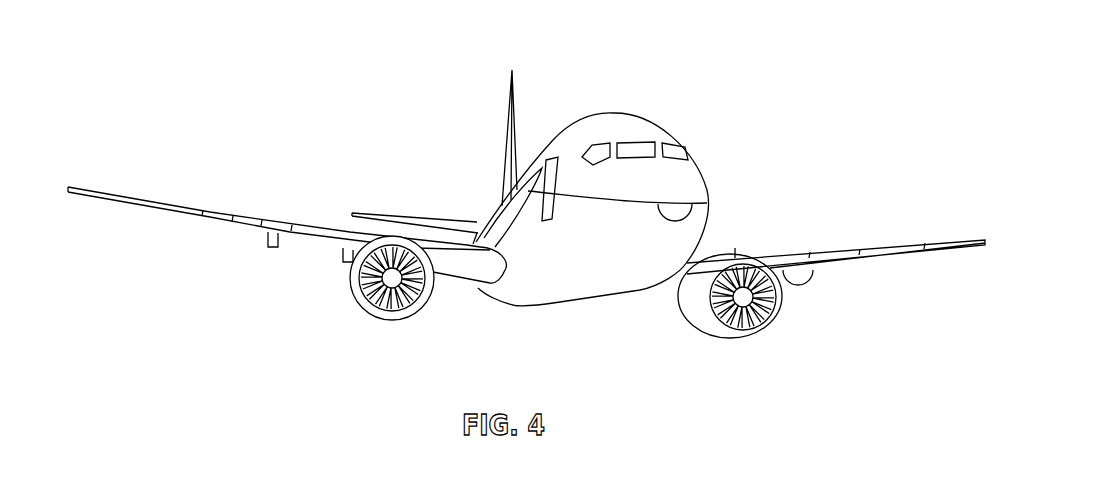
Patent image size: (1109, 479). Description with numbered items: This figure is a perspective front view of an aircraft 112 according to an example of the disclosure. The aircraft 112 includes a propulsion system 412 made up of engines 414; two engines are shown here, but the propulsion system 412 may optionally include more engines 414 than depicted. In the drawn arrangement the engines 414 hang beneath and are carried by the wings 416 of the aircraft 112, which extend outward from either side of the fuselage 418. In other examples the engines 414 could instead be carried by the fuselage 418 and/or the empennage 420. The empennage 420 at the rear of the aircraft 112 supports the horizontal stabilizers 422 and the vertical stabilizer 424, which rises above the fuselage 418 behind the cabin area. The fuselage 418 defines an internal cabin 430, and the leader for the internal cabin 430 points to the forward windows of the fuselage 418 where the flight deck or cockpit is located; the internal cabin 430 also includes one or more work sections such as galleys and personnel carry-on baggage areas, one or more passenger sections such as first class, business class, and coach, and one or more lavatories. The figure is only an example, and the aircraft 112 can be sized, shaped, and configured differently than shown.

The aircraft 112 is at (300, 71).
The propulsion system 412 is at (338, 305).
The engines 414 is at (390, 320).
The wings 416 is at (196, 208).
The fuselage 418 is at (708, 172).
The empennage 420 is at (500, 203).
The horizontal stabilizers 422 is at (388, 212).
The vertical stabilizer 424 is at (507, 108).
The internal cabin 430 is at (637, 145).